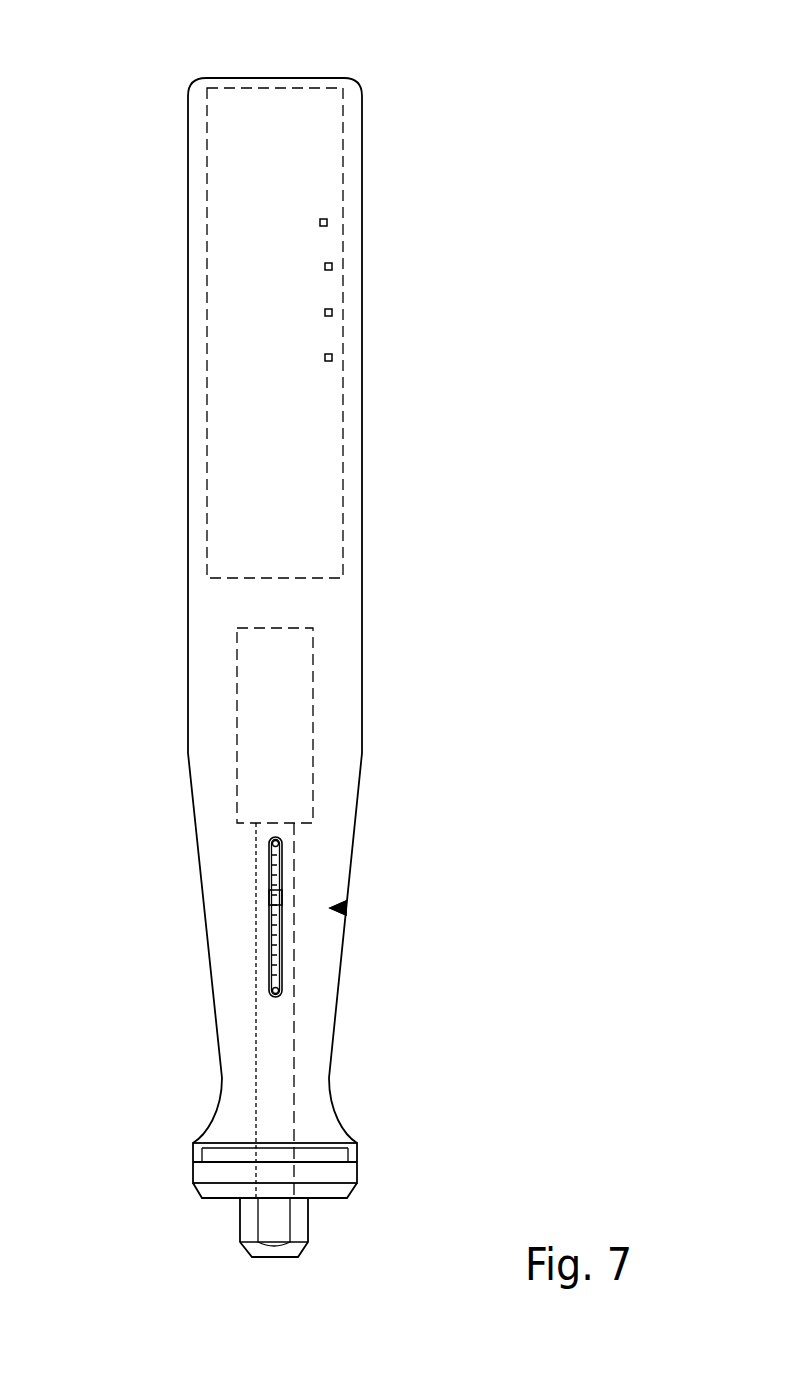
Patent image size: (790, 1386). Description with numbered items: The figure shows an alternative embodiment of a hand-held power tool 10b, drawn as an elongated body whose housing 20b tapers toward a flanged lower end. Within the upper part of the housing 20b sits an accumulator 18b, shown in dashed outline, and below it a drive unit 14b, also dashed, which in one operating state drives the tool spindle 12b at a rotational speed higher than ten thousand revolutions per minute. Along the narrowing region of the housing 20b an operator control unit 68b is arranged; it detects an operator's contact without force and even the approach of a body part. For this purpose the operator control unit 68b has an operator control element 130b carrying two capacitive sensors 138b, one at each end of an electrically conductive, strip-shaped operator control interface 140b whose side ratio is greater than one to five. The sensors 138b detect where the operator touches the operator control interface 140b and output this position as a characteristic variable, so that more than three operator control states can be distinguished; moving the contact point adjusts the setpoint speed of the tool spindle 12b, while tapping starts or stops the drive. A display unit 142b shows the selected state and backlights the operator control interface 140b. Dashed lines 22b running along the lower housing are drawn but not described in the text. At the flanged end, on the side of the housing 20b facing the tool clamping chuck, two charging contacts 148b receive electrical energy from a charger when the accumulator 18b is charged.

The hand-held power tool 10b is at (419, 90).
The tool spindle 12b is at (275, 1052).
The drive unit 14b is at (313, 728).
The accumulator 18b is at (343, 470).
The hand-held power tool housing 20b is at (352, 612).
The guide channel 22b is at (258, 878).
The operator control unit 68b is at (344, 908).
The operator control element 130b is at (344, 908).
The capacitive sensors 138b is at (283, 840).
The operator control interface 140b is at (282, 938).
The display unit 142b is at (282, 900).
The charging contacts 148b is at (193, 1148).